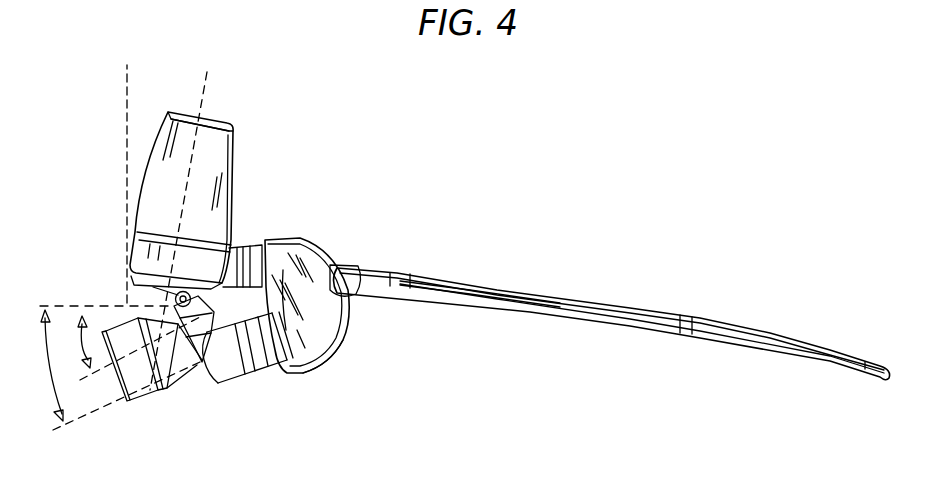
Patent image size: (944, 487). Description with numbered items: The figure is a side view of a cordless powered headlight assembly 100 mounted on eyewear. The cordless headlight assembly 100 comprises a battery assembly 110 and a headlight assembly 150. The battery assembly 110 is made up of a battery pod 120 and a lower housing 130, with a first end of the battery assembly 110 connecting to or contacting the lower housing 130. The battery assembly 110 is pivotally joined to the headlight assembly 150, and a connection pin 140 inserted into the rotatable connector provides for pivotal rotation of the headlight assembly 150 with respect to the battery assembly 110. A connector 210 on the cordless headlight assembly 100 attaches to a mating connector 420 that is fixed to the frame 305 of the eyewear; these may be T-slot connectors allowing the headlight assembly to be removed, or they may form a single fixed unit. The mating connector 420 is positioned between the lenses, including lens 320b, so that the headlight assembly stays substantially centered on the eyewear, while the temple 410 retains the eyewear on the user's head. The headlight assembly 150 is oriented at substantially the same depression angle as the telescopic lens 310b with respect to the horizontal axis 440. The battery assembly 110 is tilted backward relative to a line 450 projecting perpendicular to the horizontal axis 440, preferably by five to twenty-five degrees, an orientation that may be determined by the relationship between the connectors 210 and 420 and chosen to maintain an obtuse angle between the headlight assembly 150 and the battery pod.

The cordless headlight assembly 100 is at (238, 108).
The battery assembly 110 is at (233, 147).
The battery pod 120 is at (218, 160).
The lower housing 130 is at (142, 258).
The connection pin 140 is at (176, 302).
The headlight assembly 150 is at (143, 378).
The connector 210 is at (224, 258).
The frame 305 is at (326, 362).
The telescopic lens 310b is at (217, 385).
The lens 320b is at (322, 325).
The temple 410 is at (578, 292).
The mating connector 420 is at (254, 262).
The horizontal axis 440 is at (73, 365).
The perpendicular line 450 is at (127, 120).